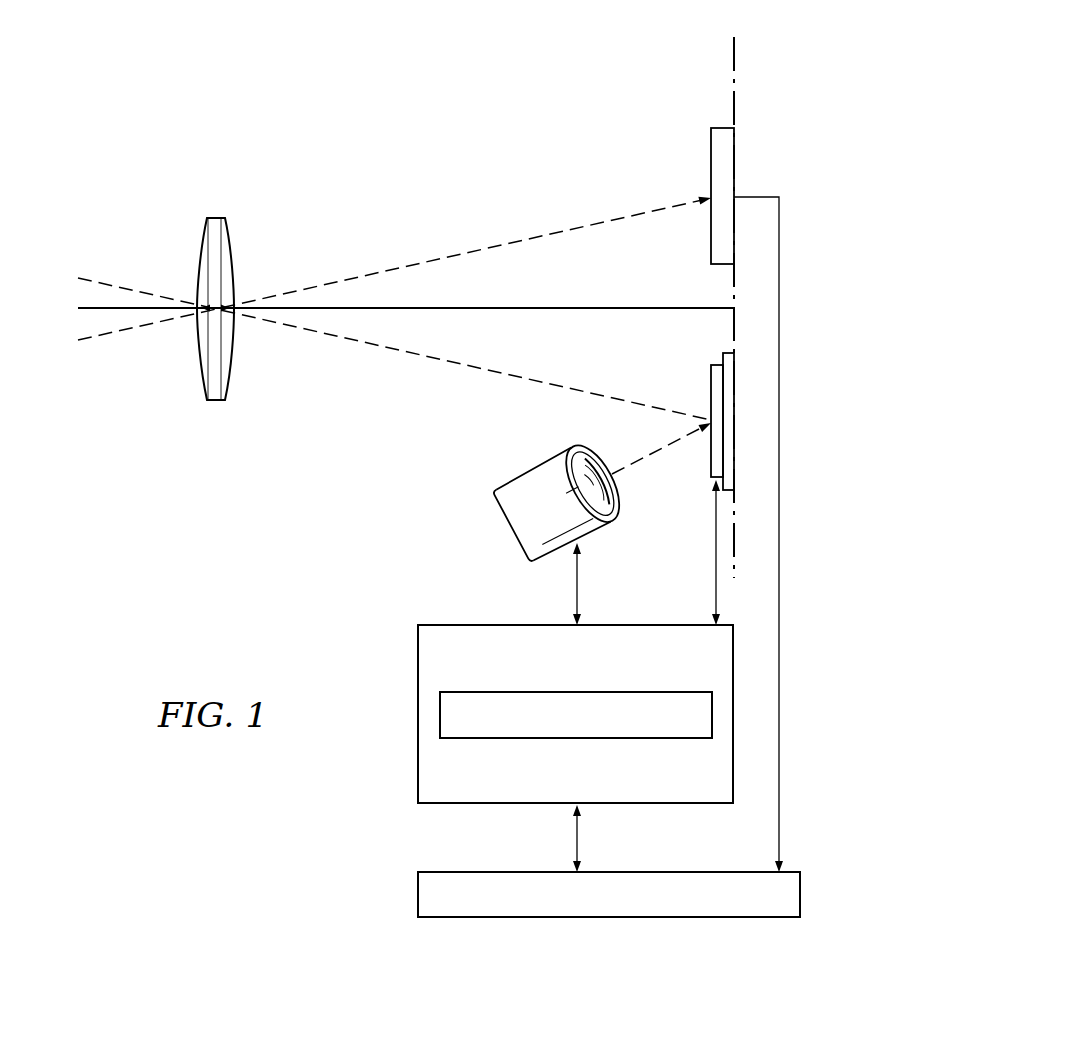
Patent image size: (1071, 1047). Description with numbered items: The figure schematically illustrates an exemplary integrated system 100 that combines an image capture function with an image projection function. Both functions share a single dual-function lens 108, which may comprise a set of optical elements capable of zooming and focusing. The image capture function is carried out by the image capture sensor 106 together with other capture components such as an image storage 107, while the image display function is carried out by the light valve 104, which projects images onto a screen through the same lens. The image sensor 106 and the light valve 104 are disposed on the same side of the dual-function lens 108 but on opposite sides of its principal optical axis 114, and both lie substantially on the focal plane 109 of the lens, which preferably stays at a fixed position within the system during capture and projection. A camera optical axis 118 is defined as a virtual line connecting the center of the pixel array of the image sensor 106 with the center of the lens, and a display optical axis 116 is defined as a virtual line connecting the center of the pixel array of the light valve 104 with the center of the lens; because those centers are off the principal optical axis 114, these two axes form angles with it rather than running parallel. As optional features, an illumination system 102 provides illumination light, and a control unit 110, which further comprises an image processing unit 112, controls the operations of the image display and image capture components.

The integrated system 100 is at (282, 129).
The illumination system 102 is at (497, 517).
The light valve 104 is at (711, 379).
The image capture sensor 106 is at (711, 151).
The image storage 107 is at (497, 871).
The dual-function lens 108 is at (214, 401).
The focal plane 109 is at (733, 58).
The control unit 110 is at (469, 619).
The image processing unit 112 is at (587, 739).
The principal optical axis 114 is at (553, 307).
The display optical axis 116 is at (128, 288).
The camera optical axis 118 is at (128, 330).